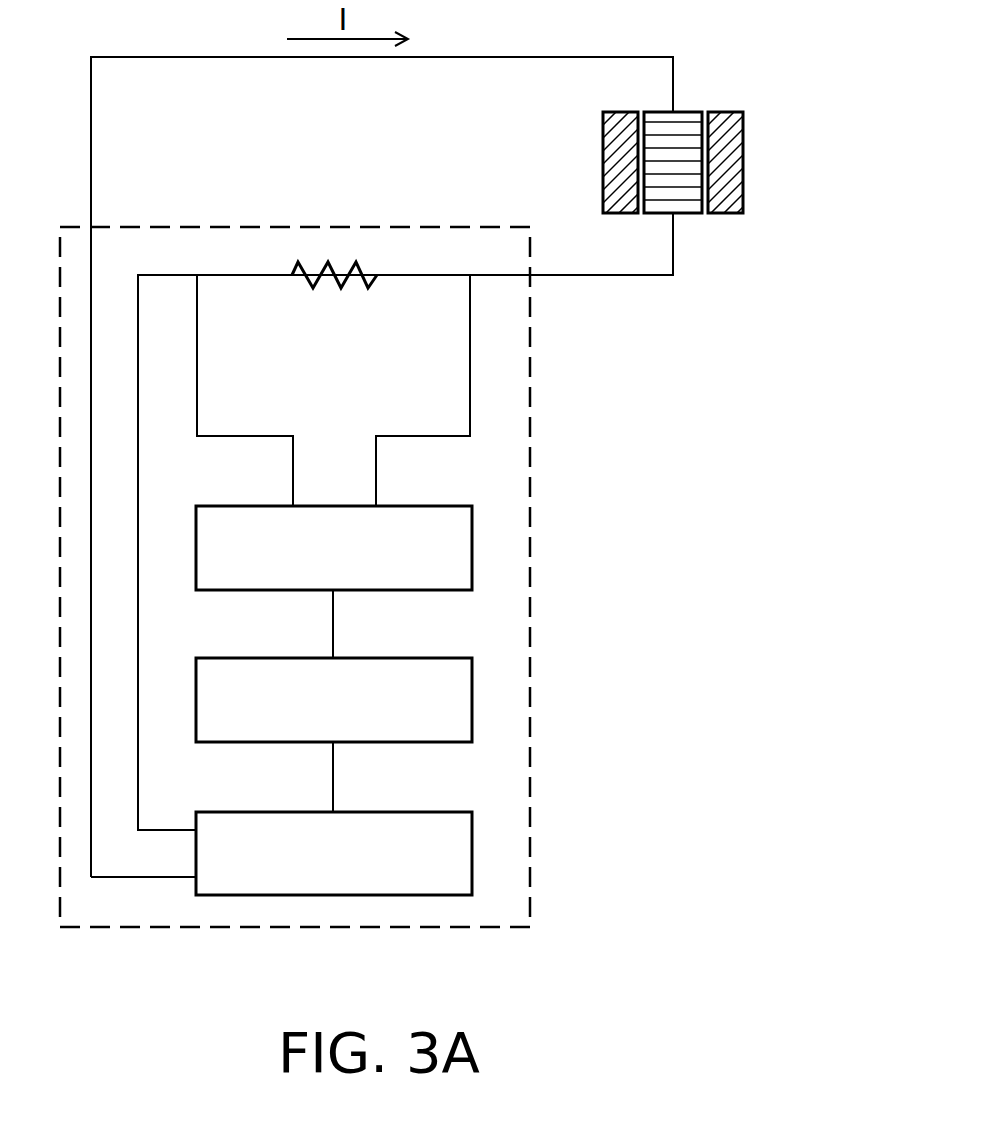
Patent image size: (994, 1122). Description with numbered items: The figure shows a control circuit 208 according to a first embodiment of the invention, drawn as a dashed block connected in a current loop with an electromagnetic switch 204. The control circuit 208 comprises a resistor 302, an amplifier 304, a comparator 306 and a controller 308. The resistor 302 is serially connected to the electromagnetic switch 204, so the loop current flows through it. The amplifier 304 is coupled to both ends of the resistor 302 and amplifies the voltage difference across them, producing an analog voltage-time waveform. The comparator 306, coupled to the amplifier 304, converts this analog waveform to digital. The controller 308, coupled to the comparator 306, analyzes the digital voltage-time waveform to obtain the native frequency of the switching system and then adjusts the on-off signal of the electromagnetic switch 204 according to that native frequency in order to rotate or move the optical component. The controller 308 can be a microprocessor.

The electromagnetic switch 204 is at (737, 168).
The control circuit 208 is at (530, 436).
The resistor 302 is at (353, 263).
The amplifier 304 is at (453, 545).
The comparator 306 is at (453, 699).
The controller 308 is at (453, 852).